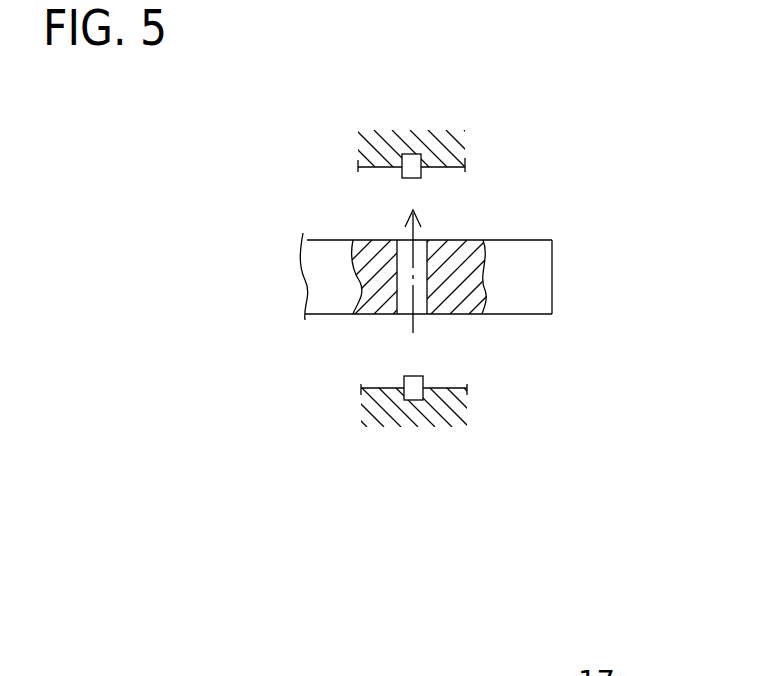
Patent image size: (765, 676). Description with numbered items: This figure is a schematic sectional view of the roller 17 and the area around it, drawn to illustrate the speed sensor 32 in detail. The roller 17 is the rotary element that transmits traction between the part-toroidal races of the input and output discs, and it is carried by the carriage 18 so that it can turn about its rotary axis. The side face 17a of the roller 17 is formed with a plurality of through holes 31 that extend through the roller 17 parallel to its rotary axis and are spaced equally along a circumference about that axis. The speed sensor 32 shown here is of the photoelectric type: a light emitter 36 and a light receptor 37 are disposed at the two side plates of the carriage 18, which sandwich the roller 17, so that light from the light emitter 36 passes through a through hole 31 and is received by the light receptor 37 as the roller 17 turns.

The roller 17 is at (545, 230).
The side face 17a is at (502, 240).
The carriage 18 is at (377, 145).
The through hole 31 is at (420, 305).
The speed sensor 32 is at (390, 375).
The light emitter 36 is at (413, 400).
The light receptor 37 is at (412, 156).